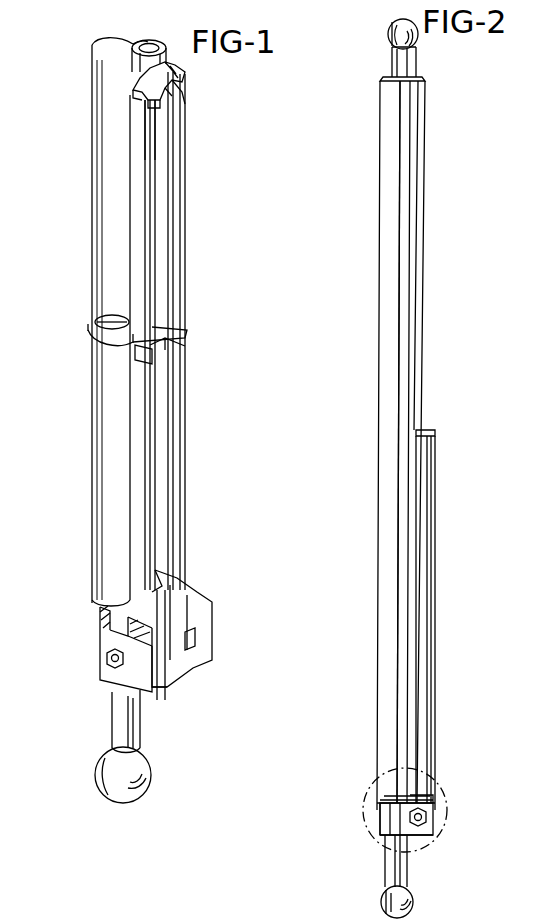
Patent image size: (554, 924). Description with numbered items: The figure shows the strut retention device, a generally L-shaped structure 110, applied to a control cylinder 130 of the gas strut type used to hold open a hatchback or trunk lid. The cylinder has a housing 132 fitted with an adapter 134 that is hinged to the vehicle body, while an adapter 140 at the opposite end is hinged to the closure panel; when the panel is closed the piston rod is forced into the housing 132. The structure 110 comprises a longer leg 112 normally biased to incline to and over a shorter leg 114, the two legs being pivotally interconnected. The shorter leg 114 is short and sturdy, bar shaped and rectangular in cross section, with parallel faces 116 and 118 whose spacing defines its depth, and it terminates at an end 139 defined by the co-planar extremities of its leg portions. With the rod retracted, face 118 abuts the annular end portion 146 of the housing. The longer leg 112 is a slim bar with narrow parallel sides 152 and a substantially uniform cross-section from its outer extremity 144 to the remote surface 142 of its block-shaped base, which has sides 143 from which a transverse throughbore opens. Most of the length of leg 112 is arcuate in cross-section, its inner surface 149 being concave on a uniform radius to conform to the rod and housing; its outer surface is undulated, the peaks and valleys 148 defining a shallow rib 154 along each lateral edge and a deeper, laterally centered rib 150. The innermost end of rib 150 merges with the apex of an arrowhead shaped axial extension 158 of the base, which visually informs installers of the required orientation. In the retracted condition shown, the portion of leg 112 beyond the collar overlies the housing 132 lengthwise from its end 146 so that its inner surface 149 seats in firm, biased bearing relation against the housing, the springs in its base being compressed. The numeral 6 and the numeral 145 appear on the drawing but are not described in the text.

In FIG. 1, the generally L-shaped structure 110 is at (190, 354).
In FIG. 2, the generally L-shaped structure 110 is at (437, 660).
In FIG. 1, the longer leg 112 is at (165, 230).
In FIG. 2, the longer leg 112 is at (432, 468).
In FIG. 1, the shorter leg 114 is at (97, 640).
In FIG. 2, the shorter leg 114 is at (380, 826).
In FIG. 1, the face 116 is at (103, 705).
In FIG. 2, the face 116 is at (423, 842).
In FIG. 1, the face 118 is at (104, 612).
In FIG. 2, the face 118 is at (386, 800).
In FIG. 1, the control cylinder 130 is at (90, 339).
In FIG. 2, the control cylinder 130 is at (426, 184).
In FIG. 2, the cylinder housing 132 is at (423, 233).
In FIG. 2, the adapter 134 is at (416, 50).
In FIG. 1, the end 139 is at (210, 612).
In FIG. 1, the adapter 140 is at (97, 768).
In FIG. 2, the adapter 140 is at (409, 883).
In FIG. 1, the remote surface 142 is at (173, 690).
In FIG. 1, the sides 143 is at (105, 668).
In FIG. 1, the outer extremity 144 is at (178, 67).
In FIG. 2, the outer extremity 144 is at (431, 432).
In FIG. 1, the slot 145 is at (163, 655).
In FIG. 2, the annular end portion 146 is at (390, 810).
In FIG. 1, the peaks and valleys 148 is at (176, 85).
In FIG. 1, the inner surface 149 is at (147, 73).
In FIG. 1, the rib 150 is at (183, 105).
In FIG. 1, the sides 152 is at (138, 122).
In FIG. 1, the rib 154 is at (158, 160).
In FIG. 1, the arrowhead shaped axial extension 158 is at (183, 592).
In FIG. 2, the arrowhead shaped axial extension 158 is at (435, 792).
In FIG. 2, the section view indicator circle 6 is at (445, 798).